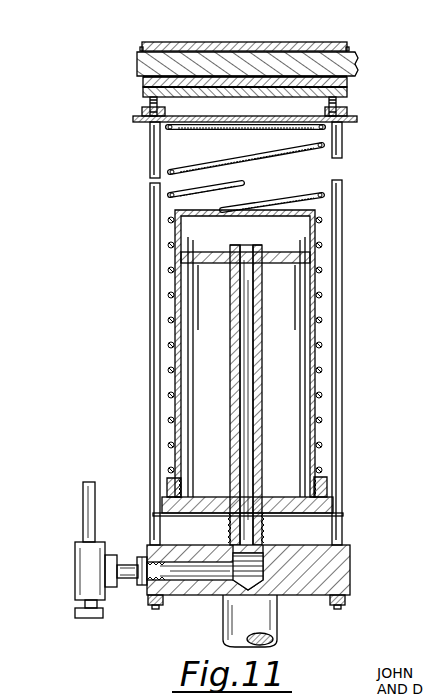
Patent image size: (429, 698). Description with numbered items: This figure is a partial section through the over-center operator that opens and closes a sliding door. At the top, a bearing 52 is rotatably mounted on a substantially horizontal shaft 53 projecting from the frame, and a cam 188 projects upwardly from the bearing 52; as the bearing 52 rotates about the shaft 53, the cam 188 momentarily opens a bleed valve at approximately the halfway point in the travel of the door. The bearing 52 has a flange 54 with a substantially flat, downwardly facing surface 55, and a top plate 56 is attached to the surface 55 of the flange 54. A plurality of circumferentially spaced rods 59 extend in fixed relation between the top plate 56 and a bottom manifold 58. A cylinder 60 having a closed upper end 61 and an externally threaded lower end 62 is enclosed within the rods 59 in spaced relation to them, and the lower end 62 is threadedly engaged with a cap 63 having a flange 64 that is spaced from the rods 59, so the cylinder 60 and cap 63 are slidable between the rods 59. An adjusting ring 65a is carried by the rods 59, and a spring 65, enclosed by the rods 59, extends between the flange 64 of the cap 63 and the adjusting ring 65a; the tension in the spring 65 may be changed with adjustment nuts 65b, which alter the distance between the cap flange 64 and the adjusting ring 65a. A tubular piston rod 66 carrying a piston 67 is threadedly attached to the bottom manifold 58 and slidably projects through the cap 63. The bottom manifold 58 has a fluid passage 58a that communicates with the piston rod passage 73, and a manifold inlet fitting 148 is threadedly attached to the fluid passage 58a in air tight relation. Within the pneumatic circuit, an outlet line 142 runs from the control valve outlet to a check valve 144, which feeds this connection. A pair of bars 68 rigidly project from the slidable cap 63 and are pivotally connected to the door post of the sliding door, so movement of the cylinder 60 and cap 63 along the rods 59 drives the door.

The cam 188 is at (143, 43).
The bearing 52 is at (142, 47).
The shaft 53 is at (138, 63).
The flange 54 is at (143, 83).
The surface 55 is at (198, 87).
The top plate 56 is at (143, 93).
The adjustment nuts 65b is at (347, 110).
The adjusting ring 65a is at (353, 122).
The spring 65 is at (323, 148).
The rods 59 is at (150, 217).
The closed upper end 61 is at (218, 210).
The piston 67 is at (290, 250).
The cylinder 60 is at (317, 260).
The piston rod passage 73 is at (247, 350).
The tubular piston rod 66 is at (262, 372).
The externally threaded lower end 62 is at (318, 462).
The cap 63 is at (163, 505).
The flange 64 is at (333, 503).
The bottom manifold 58 is at (350, 585).
The fluid passage 58a is at (193, 572).
The bars 68 is at (277, 628).
The manifold inlet fitting 148 is at (132, 580).
The check valve 144 is at (75, 555).
The outlet line 142 is at (83, 505).